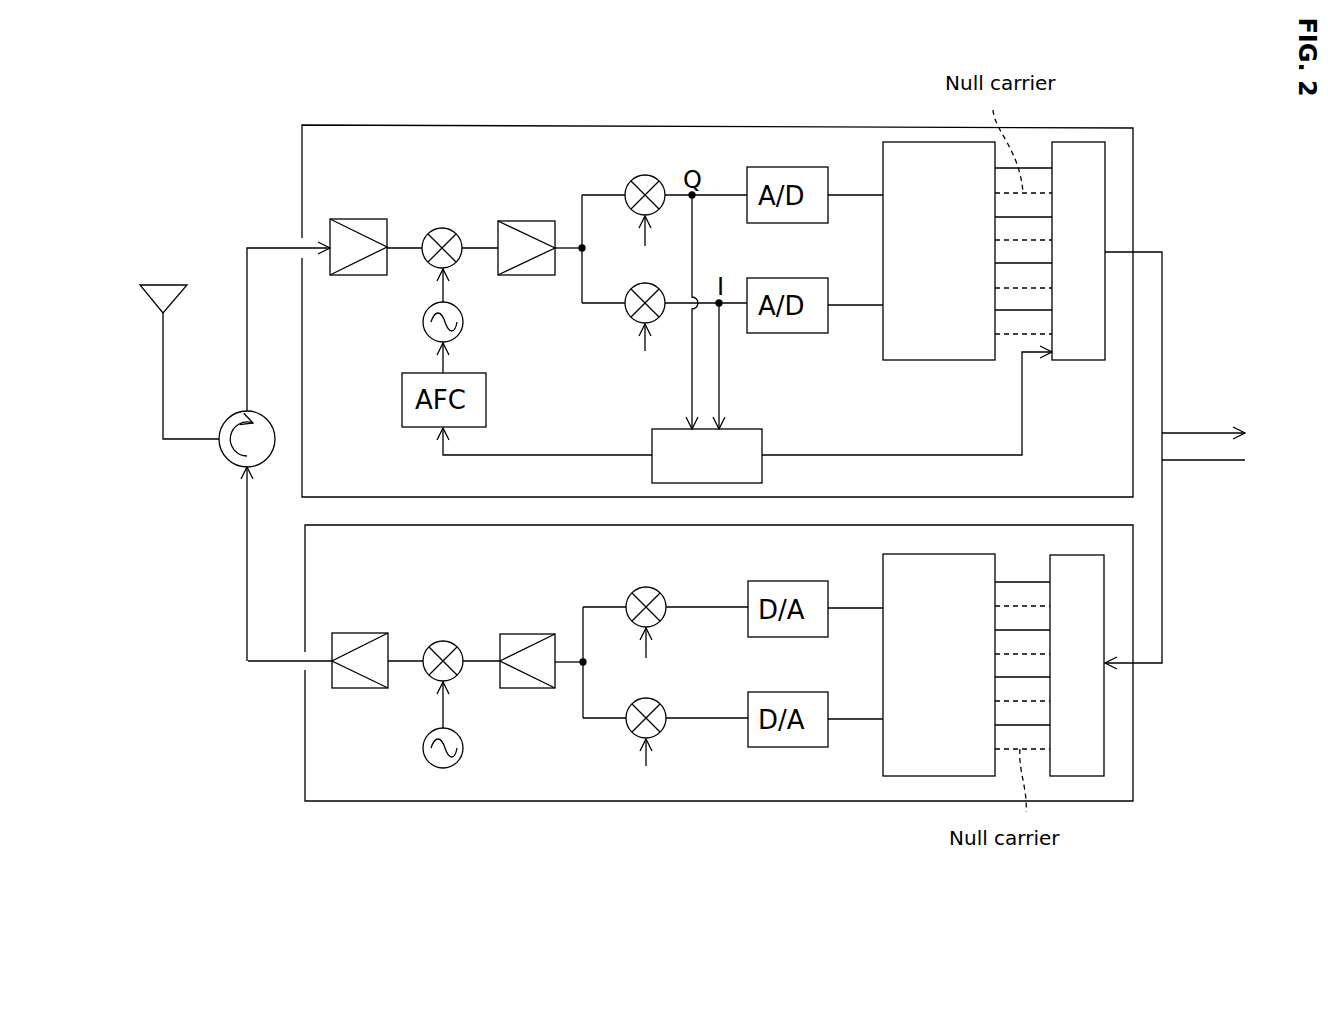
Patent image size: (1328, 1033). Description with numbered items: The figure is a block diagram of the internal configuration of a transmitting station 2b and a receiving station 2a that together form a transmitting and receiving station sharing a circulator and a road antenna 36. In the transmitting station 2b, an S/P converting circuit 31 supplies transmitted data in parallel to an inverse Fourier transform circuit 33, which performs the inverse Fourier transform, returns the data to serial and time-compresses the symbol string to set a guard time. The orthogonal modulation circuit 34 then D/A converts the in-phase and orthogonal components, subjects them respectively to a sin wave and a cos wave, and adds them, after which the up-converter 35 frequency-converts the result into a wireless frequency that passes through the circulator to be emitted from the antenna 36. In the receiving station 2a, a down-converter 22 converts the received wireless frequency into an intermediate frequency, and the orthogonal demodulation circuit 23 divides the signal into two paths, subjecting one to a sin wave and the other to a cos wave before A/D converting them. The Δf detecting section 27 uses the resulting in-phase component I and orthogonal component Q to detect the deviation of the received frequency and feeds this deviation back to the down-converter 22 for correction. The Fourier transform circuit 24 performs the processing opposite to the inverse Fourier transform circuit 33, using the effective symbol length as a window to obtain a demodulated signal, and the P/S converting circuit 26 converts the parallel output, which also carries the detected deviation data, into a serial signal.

The receiving station 2a is at (378, 124).
The transmitting station 2b is at (380, 801).
The down-converter 22 is at (446, 207).
The orthogonal demodulation circuit 23 is at (718, 167).
The Fourier transform circuit 24 is at (898, 142).
The P/S converting circuit 26 is at (1093, 142).
The Δf detecting section 27 is at (748, 428).
The S/P converting circuit 31 is at (1099, 776).
The inverse Fourier transform circuit 33 is at (902, 776).
The orthogonal modulation circuit 34 is at (694, 766).
The up-converter 35 is at (484, 718).
The road antenna 36 is at (152, 283).